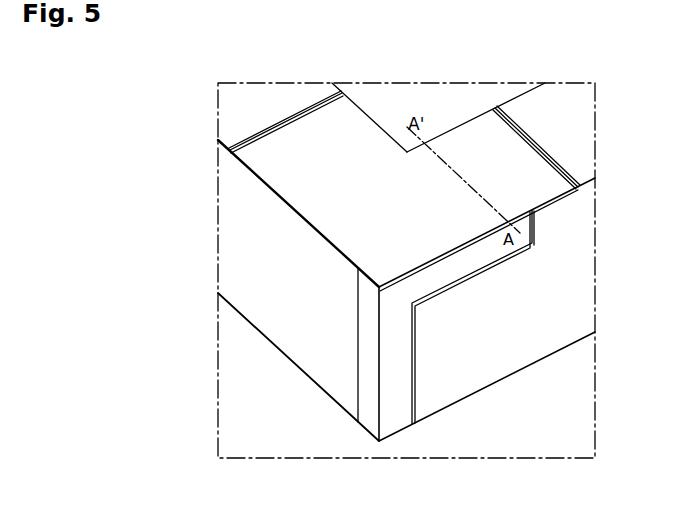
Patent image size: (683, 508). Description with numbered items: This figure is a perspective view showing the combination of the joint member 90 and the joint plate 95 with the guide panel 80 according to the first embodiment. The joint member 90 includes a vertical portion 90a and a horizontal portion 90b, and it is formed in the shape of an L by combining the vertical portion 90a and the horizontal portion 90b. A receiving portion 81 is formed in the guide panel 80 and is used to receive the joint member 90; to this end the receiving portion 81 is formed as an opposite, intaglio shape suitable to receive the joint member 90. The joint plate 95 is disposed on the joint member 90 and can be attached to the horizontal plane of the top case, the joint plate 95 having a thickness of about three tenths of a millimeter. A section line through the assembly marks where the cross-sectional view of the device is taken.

The guide panel 80 is at (573, 311).
The receiving portion 81 is at (413, 375).
The joint member 90 is at (143, 254).
The vertical portion 90a is at (438, 268).
The horizontal portion 90b is at (393, 364).
The joint plate 95 is at (470, 132).